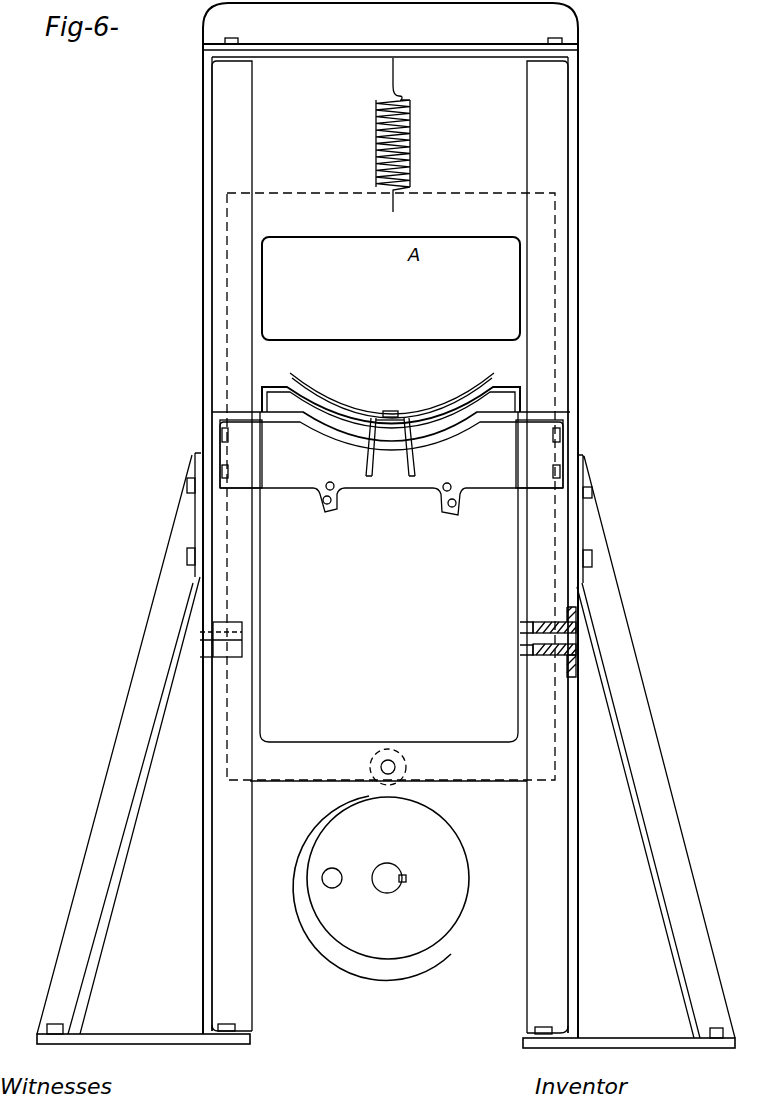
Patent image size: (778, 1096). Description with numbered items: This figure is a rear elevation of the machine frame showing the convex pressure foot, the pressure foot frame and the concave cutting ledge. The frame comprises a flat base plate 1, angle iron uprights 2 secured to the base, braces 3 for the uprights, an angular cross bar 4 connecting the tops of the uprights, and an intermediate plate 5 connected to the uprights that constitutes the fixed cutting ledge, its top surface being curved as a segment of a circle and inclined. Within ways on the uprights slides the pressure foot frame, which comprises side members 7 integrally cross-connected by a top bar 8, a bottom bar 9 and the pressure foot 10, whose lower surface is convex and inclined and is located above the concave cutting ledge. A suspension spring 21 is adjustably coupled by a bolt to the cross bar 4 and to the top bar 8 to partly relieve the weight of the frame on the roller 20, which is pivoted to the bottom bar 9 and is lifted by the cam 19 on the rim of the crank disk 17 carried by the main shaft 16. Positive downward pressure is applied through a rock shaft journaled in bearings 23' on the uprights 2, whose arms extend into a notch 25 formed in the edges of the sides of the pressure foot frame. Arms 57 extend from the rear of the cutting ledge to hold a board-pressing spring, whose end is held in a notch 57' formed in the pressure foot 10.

The base plate 1 is at (137, 1042).
The angle iron uprights 2 is at (215, 122).
The braces 3 is at (122, 733).
The angular cross bar 4 is at (390, 31).
The intermediate plate 5 is at (391, 463).
The side members 7 is at (233, 356).
The top bar 8 is at (391, 486).
The bottom bar 9 is at (315, 752).
The pressure foot 10 is at (392, 388).
The main shaft 16 is at (383, 888).
The crank disk 17 is at (471, 880).
The cam 19 is at (307, 830).
The roller 20 is at (400, 785).
The suspension spring 21 is at (376, 117).
The bearings 23' is at (603, 634).
The notch 25 is at (521, 638).
The arms 57 is at (367, 447).
The notch 57' is at (415, 390).